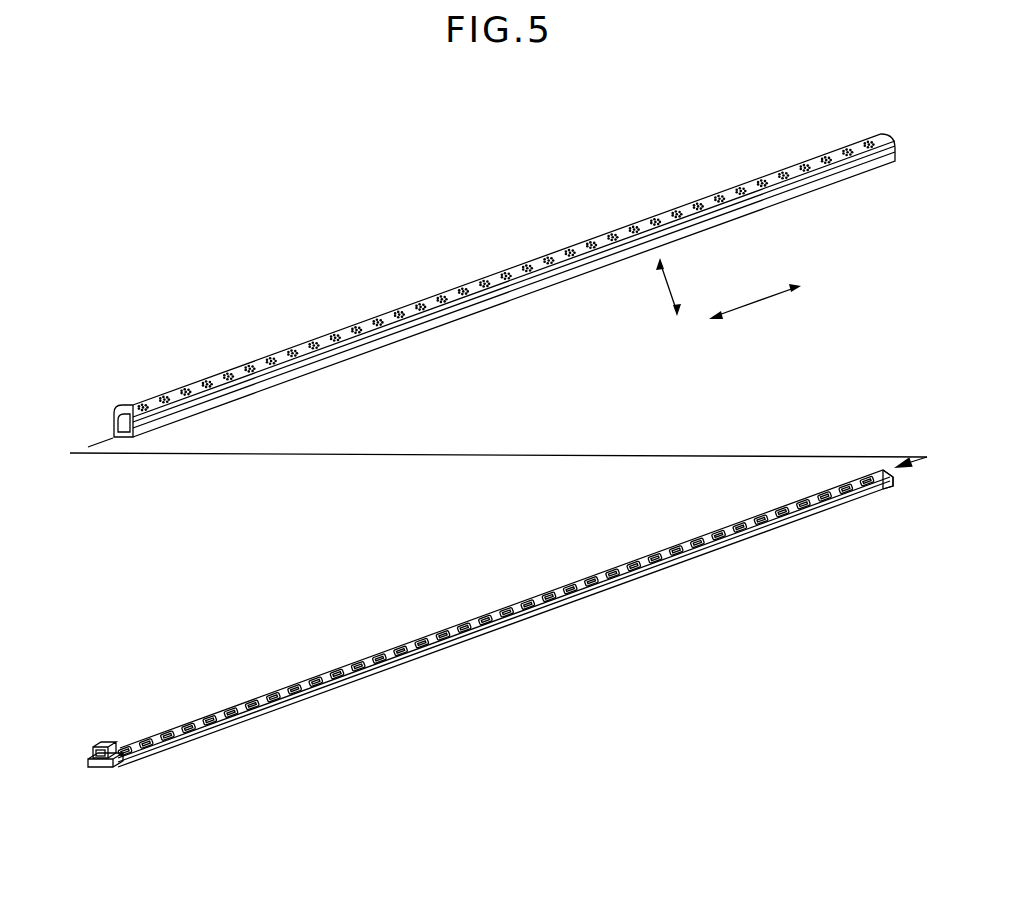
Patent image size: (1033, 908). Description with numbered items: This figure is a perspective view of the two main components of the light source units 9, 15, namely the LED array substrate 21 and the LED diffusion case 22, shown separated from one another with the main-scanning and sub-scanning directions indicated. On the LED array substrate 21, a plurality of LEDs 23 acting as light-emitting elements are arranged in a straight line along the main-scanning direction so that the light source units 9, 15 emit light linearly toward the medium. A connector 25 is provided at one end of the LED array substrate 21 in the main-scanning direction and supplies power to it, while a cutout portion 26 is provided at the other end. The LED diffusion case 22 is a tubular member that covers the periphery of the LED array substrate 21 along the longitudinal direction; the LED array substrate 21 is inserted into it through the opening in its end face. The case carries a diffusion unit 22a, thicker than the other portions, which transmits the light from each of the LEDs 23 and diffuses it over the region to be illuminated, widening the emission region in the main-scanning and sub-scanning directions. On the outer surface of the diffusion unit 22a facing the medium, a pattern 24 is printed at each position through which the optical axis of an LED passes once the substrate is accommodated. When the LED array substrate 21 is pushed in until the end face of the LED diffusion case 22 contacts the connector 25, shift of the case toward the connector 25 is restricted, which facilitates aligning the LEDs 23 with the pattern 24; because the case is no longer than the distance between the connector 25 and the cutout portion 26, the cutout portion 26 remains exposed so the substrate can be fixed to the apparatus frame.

The light source unit 9 is at (498, 450).
The light source unit 15 is at (118, 345).
The LED array substrate 21 is at (316, 702).
The LED diffusion case 22 is at (530, 252).
The diffusion unit 22a is at (535, 270).
The LEDs 23 is at (429, 641).
The pattern 24 is at (282, 354).
The connector 25 is at (110, 746).
The cutout portion 26 is at (876, 462).